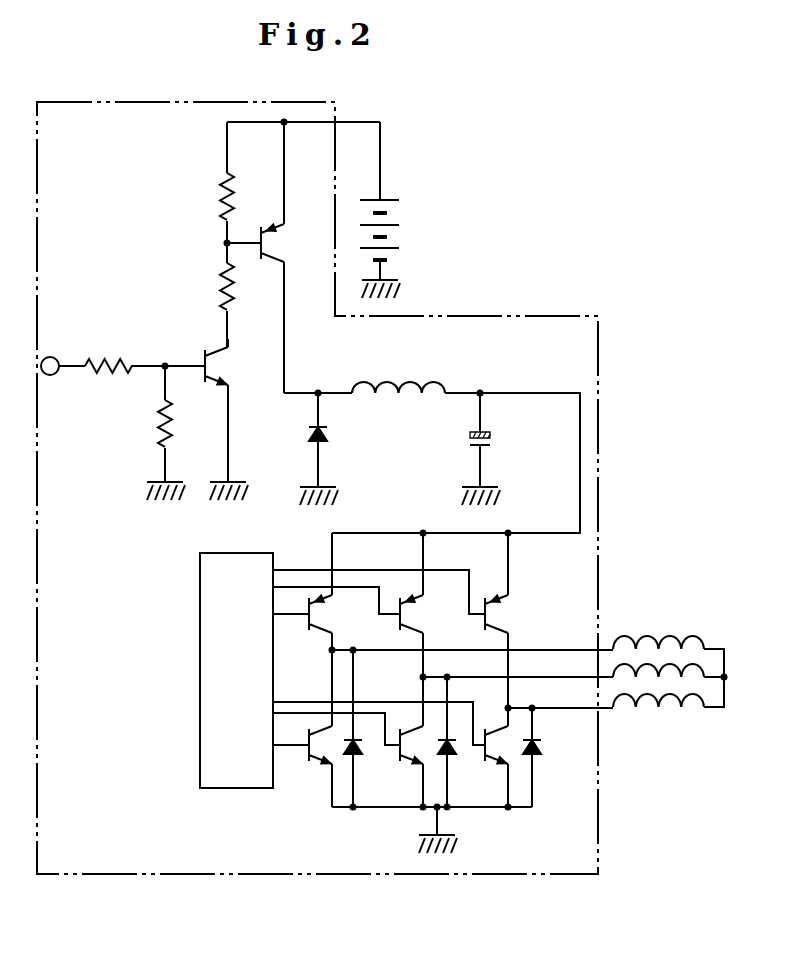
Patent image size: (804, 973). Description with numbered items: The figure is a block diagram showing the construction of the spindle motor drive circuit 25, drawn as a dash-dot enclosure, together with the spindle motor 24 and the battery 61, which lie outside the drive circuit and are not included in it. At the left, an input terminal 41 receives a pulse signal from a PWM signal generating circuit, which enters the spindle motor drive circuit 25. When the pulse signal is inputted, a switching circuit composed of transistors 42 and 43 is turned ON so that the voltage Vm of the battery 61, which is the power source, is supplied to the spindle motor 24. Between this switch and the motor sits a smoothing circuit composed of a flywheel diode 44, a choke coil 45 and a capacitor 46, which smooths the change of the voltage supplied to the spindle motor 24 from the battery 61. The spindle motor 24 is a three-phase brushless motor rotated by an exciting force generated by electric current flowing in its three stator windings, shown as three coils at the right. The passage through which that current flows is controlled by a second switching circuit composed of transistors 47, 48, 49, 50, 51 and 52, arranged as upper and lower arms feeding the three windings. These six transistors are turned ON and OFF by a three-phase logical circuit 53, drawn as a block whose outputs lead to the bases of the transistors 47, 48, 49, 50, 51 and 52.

The spindle motor 24 is at (651, 716).
The spindle motor drive circuit 25 is at (82, 886).
The input terminal 41 is at (60, 357).
The transistor 42 is at (204, 356).
The transistor 43 is at (272, 229).
The flywheel diode 44 is at (327, 438).
The choke coil 45 is at (402, 381).
The capacitor 46 is at (491, 443).
The transistor 47 is at (310, 623).
The transistor 48 is at (411, 625).
The transistor 49 is at (497, 623).
The transistor 50 is at (324, 760).
The transistor 51 is at (414, 761).
The transistor 52 is at (499, 761).
The three-phase logical circuit 53 is at (200, 640).
The battery 61 is at (389, 200).